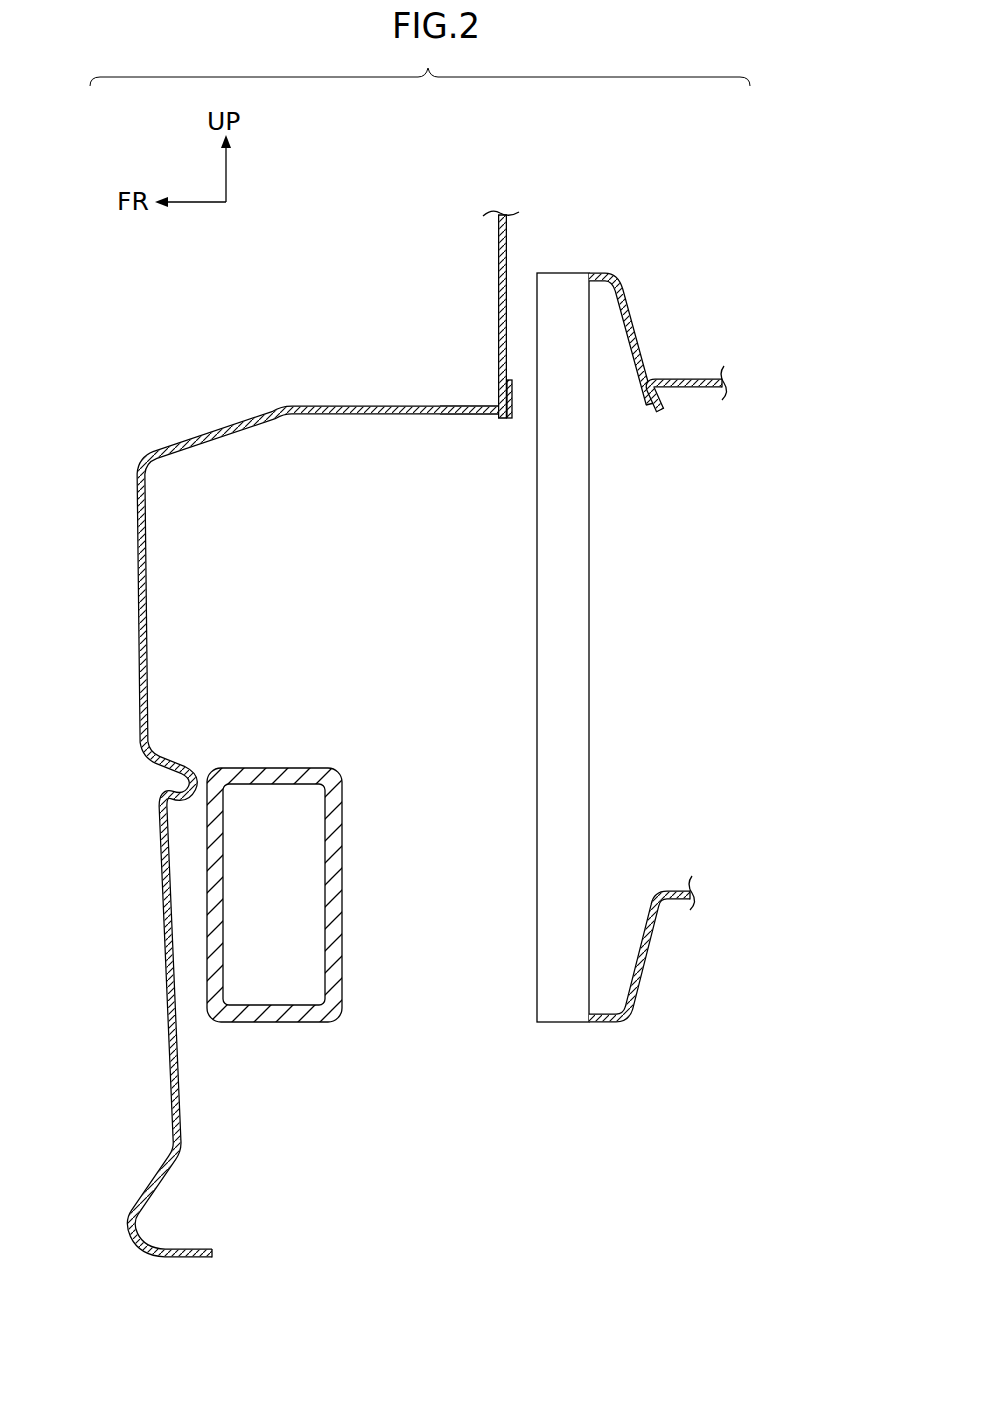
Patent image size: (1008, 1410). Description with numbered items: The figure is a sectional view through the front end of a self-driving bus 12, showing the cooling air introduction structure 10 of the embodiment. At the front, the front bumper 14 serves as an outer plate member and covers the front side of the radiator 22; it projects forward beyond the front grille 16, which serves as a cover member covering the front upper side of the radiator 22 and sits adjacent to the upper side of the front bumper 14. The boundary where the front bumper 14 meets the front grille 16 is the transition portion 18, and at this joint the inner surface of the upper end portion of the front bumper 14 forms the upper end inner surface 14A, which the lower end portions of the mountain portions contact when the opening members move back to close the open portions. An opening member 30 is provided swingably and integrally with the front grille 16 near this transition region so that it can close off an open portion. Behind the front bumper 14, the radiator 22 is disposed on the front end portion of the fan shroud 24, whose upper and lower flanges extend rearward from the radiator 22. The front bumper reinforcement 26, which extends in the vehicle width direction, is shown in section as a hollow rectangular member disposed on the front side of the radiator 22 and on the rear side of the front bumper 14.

The cooling air introduction structure 10 is at (470, 362).
The self-driving bus 12 is at (362, 290).
The front bumper 14 is at (137, 583).
The upper end inner surface 14A is at (507, 418).
The front grille 16 is at (498, 267).
The transition portion 18 is at (492, 403).
The radiator 22 is at (590, 563).
The fan shroud 24 is at (652, 950).
The front bumper reinforcement 26 is at (283, 768).
The opening member 30 is at (513, 419).